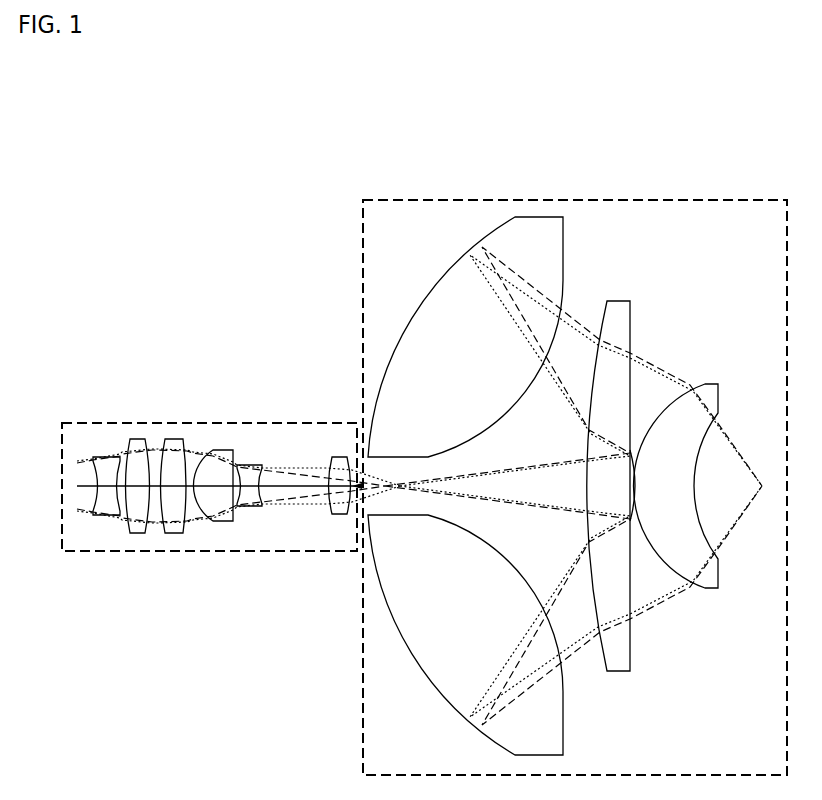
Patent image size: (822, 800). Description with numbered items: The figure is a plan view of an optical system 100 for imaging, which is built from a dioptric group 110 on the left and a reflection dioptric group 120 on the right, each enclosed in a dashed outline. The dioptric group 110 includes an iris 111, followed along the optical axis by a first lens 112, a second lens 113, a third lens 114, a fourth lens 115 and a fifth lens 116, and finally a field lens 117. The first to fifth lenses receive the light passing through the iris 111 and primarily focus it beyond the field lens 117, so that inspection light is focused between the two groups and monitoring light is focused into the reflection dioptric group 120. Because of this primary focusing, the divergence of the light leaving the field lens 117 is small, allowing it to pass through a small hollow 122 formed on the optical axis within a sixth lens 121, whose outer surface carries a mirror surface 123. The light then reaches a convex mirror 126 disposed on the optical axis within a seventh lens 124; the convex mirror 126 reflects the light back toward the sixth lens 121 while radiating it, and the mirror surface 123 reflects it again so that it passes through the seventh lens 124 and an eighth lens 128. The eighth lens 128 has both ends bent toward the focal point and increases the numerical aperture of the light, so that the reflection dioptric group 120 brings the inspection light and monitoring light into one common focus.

The optical system for imaging 100 is at (445, 90).
The dioptric group 110 is at (158, 416).
The iris 111 is at (88, 462).
The first lens 112 is at (97, 517).
The second lens 113 is at (133, 534).
The third lens 114 is at (172, 534).
The fourth lens 115 is at (217, 522).
The fifth lens 116 is at (250, 507).
The field lens 117 is at (335, 515).
The reflection dioptric group 120 is at (520, 194).
The sixth lens 121 is at (443, 655).
The hollow 122 is at (410, 500).
The mirror surface 123 is at (435, 317).
The seventh lens 124 is at (617, 655).
The convex mirror 126 is at (636, 453).
The eighth lens 128 is at (705, 573).